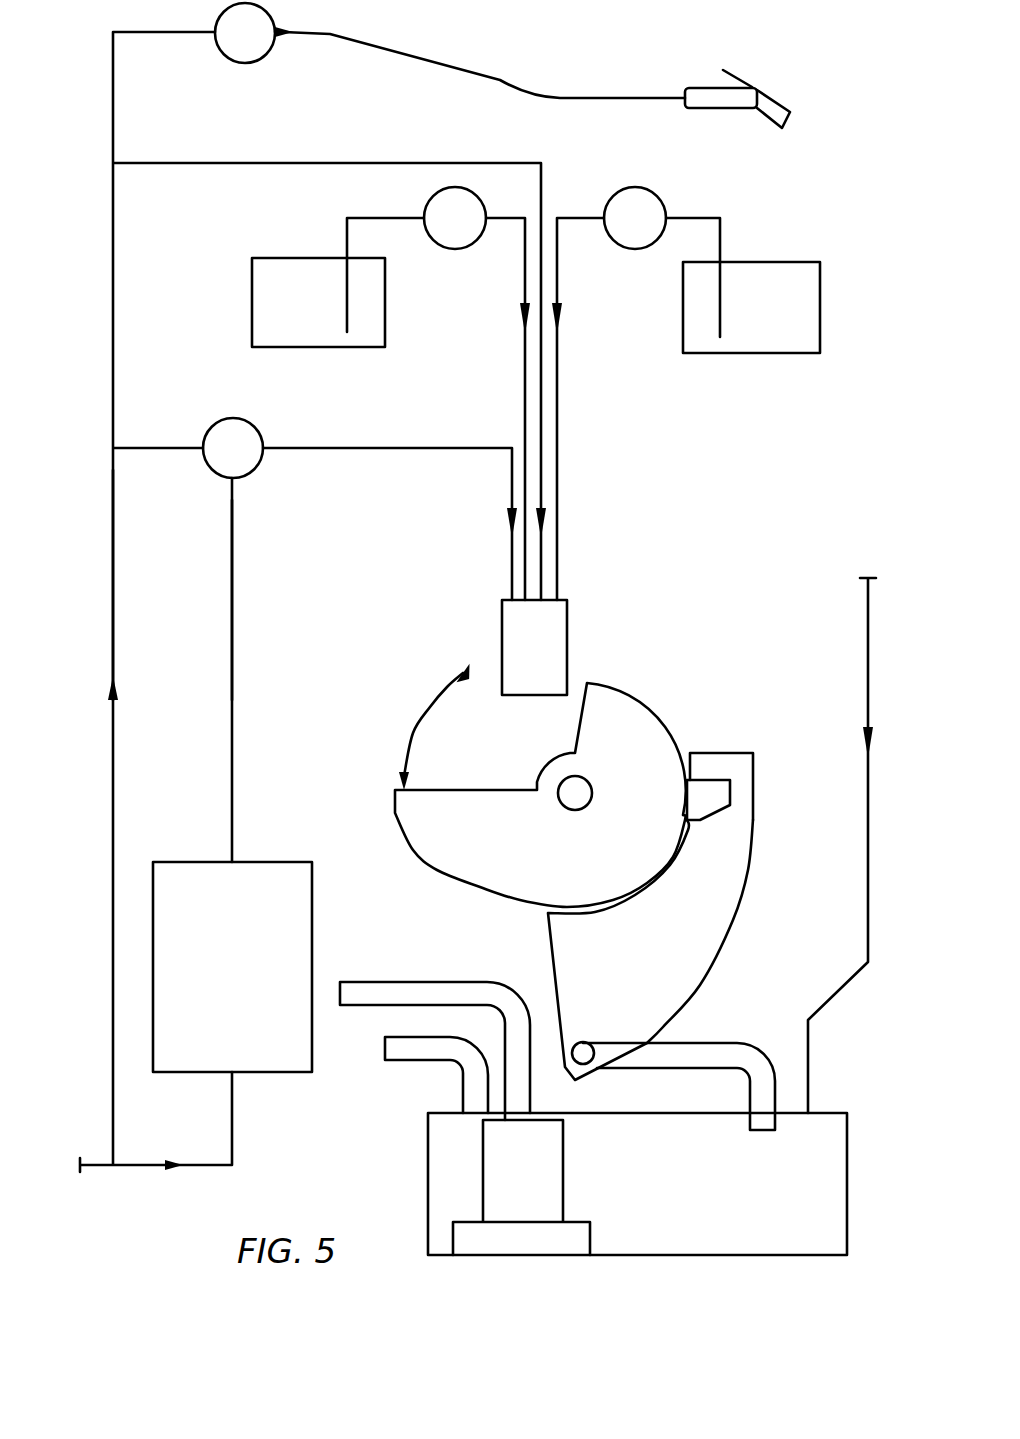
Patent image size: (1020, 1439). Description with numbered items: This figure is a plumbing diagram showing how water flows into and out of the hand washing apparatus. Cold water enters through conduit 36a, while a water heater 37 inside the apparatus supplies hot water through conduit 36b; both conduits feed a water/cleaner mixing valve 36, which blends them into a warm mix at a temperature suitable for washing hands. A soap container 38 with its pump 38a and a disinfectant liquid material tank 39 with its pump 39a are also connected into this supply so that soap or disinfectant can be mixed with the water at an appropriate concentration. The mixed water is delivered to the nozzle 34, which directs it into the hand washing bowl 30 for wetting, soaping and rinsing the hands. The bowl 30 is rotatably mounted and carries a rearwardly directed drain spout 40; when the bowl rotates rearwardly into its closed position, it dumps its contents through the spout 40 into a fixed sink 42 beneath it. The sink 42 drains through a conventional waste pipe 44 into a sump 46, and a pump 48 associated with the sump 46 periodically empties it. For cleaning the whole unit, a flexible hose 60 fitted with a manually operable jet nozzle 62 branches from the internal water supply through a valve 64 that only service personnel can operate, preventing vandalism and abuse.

The hand washing bowl 30 is at (433, 865).
The nozzle 34 is at (502, 647).
The water/cleaner mixing valve 36 is at (222, 417).
The conduit 36a is at (113, 590).
The conduit 36b is at (233, 608).
The water heater 37 is at (203, 858).
The soap container 38 is at (745, 338).
The pump 38a is at (630, 243).
The disinfectant liquid material tank 39 is at (370, 302).
The pump 39a is at (462, 242).
The drain spout 40 is at (715, 760).
The sink 42 is at (727, 927).
The waste pipe 44 is at (713, 1043).
The sump 46 is at (452, 1170).
The pump 48 is at (502, 1203).
The flexible hose 60 is at (423, 60).
The jet nozzle 62 is at (767, 125).
The valve 64 is at (247, 76).